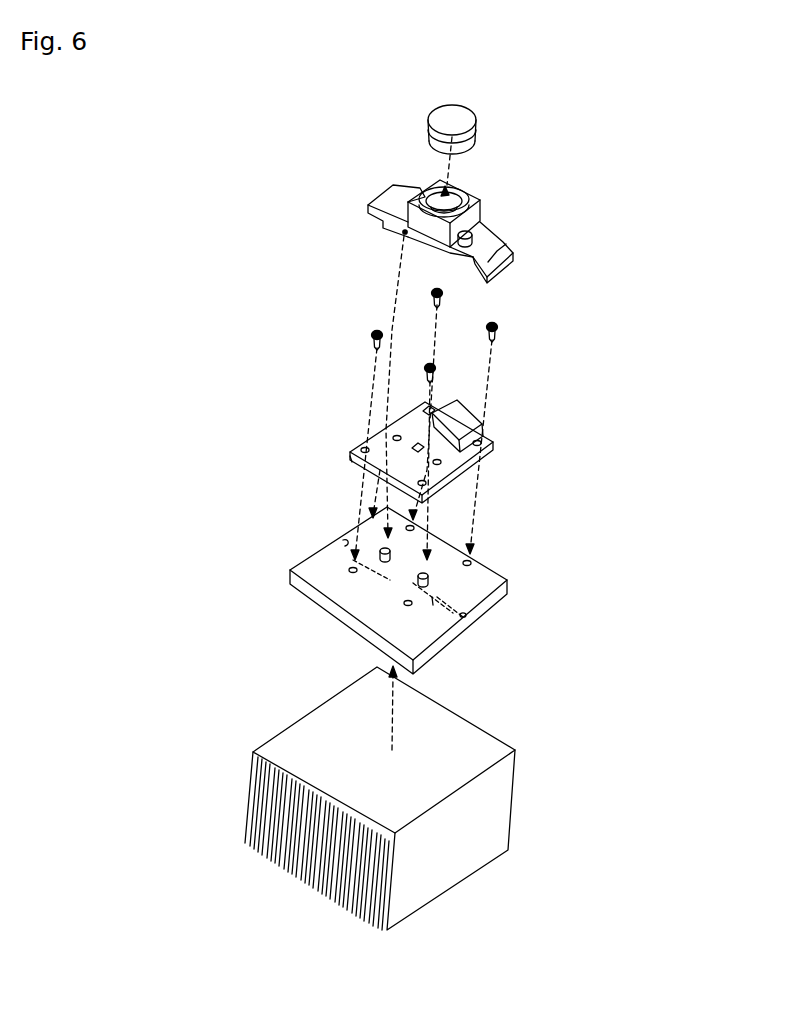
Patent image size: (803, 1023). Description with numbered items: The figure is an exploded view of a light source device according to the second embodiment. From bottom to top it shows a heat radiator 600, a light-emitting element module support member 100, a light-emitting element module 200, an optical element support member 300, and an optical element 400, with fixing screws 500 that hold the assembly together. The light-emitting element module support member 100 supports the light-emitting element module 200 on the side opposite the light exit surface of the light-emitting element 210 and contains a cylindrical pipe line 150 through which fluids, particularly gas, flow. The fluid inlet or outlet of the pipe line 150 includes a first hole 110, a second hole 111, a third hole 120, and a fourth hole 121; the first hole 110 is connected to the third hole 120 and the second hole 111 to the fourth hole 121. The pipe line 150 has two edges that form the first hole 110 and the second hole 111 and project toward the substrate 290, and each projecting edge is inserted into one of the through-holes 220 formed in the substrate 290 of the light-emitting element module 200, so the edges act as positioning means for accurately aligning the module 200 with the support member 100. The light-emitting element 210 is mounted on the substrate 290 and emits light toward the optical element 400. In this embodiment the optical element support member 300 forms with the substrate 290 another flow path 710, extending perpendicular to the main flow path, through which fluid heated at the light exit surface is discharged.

The light-emitting element module support member 100 is at (502, 572).
The first hole 110 is at (418, 583).
The second hole 111 is at (380, 565).
The third hole 120 is at (470, 616).
The fourth hole 121 is at (347, 562).
The pipe line 150 is at (433, 597).
The light-emitting element module 200 is at (458, 413).
The light-emitting element 210 is at (352, 462).
The through-holes 220 is at (395, 435).
The substrate 290 is at (458, 452).
The optical element support member 300 is at (510, 247).
The optical element 400 is at (475, 126).
The fixing screw 500 is at (488, 329).
The heat radiator 600 is at (500, 812).
The flow path 710 is at (400, 231).